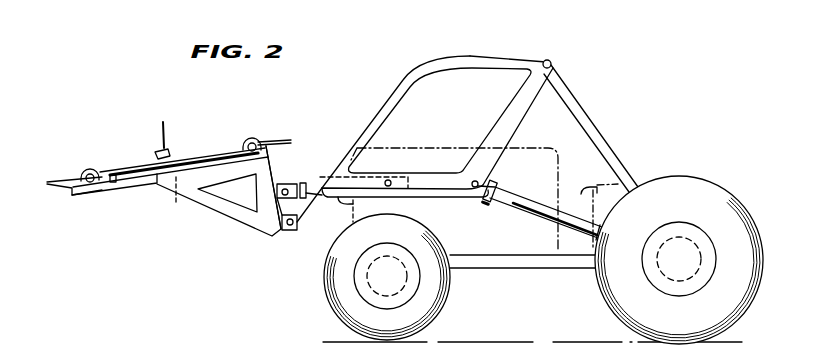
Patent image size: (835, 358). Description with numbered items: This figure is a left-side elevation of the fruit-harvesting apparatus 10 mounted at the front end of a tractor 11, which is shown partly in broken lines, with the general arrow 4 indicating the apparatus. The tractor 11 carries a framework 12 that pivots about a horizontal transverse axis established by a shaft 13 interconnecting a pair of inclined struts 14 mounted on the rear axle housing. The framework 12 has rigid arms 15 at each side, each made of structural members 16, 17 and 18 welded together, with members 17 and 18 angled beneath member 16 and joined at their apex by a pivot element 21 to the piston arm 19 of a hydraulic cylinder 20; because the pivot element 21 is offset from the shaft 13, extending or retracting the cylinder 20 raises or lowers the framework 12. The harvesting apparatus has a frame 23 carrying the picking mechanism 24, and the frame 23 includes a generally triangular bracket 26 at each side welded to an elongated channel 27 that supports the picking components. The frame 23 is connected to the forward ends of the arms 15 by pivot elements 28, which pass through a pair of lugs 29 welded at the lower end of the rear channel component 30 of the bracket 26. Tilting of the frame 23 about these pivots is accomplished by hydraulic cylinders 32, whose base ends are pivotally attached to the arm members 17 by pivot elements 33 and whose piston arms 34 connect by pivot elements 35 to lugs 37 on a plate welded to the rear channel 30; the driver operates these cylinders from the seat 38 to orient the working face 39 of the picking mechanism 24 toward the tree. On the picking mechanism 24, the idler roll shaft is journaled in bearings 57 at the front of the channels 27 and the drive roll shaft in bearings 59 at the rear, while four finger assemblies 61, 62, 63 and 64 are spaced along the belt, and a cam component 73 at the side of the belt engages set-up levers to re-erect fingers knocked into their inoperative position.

The rake attachment 4 is at (155, 82).
The apparatus 10 is at (141, 141).
The tractor 11 is at (688, 175).
The framework 12 is at (378, 99).
The shaft 13 is at (551, 60).
The inclined struts 14 is at (590, 120).
The rigid arms 15 is at (466, 55).
The structural member 16 is at (408, 84).
The structural member 17 is at (440, 176).
The structural member 18 is at (518, 97).
The piston arm 19 is at (487, 180).
The hydraulic cylinder 20 is at (514, 205).
The pivot element 21 is at (468, 190).
The frame 23 is at (194, 206).
The picking mechanism 24 is at (119, 161).
The triangular brackets 26 is at (237, 220).
The elongated channel 27 is at (128, 190).
The pivot elements 28 is at (292, 231).
The lugs 29 is at (305, 216).
The rear channel component 30 is at (269, 167).
The hydraulic cylinders 32 is at (352, 206).
The pivot elements 33 is at (389, 180).
The piston arms 34 is at (303, 183).
The pivot elements 35 is at (277, 192).
The lugs 37 is at (287, 184).
The seat 38 is at (595, 185).
The working face 39 is at (208, 149).
The bearings 57 is at (86, 170).
The bearings 59 is at (251, 139).
The finger assembly 61 is at (56, 187).
The finger assembly 62 is at (165, 123).
The finger assembly 63 is at (282, 141).
The finger assembly 64 is at (175, 202).
The cam component 73 is at (113, 185).